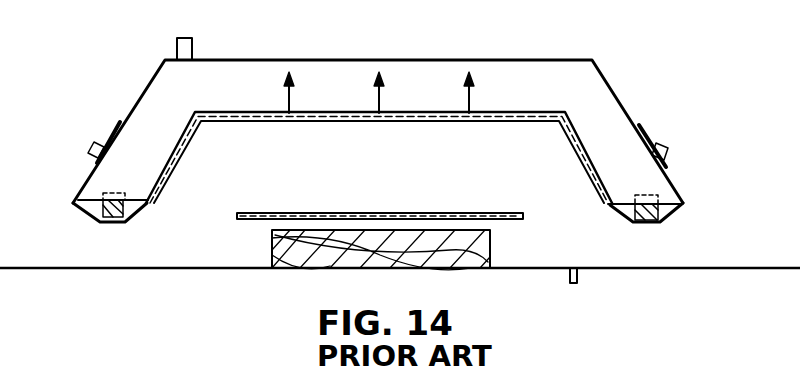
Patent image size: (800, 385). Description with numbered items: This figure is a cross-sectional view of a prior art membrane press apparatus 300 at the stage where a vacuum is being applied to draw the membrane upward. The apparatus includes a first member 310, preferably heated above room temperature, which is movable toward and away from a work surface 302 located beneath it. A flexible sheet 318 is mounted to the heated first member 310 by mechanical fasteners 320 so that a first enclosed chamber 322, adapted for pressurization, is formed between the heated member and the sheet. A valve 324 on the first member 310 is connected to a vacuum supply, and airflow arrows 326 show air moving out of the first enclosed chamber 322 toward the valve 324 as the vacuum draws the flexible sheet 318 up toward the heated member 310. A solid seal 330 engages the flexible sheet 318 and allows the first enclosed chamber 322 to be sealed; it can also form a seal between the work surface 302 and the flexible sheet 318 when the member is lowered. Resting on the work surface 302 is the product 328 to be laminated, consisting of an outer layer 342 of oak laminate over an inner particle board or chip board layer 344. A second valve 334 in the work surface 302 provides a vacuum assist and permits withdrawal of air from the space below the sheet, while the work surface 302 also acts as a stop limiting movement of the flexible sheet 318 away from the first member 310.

The membrane press apparatus 300 is at (120, 84).
The work surface 302 is at (105, 270).
The first member 310 is at (580, 58).
The flexible sheet 318 is at (335, 122).
The mechanical fasteners 320 is at (94, 147).
The first enclosed chamber 322 is at (422, 129).
The valve 324 is at (192, 44).
The airflow arrows 326 is at (291, 100).
The product 328 is at (298, 206).
The seal 330 is at (92, 196).
The second valve 334 is at (580, 272).
The outer layer 342 is at (460, 212).
The inner layer 344 is at (490, 248).